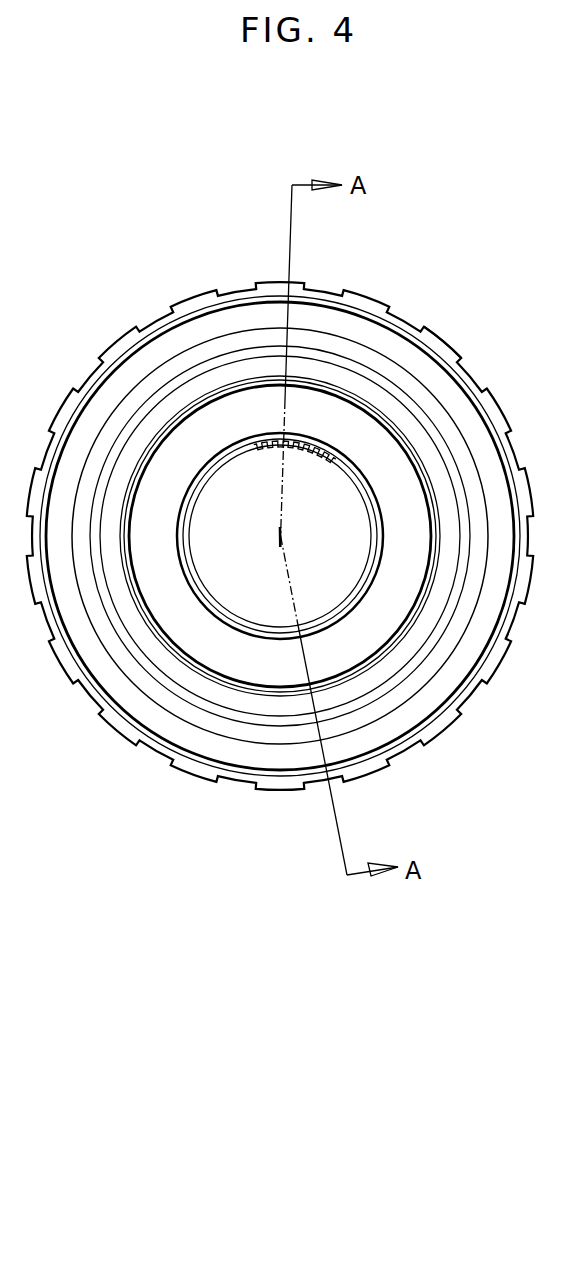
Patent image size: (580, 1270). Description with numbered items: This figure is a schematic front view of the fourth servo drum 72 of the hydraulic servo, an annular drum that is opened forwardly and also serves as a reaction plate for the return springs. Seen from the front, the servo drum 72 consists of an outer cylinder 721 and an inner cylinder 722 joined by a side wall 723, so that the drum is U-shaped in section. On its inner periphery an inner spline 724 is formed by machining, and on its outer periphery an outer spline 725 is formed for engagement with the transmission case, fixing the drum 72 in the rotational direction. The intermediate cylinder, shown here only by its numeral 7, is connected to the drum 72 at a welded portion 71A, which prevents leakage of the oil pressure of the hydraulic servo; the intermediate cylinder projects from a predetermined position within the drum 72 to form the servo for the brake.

The lens barrel 7 is at (309, 536).
The welded portion 71A is at (425, 407).
The fourth servo drum 72 is at (402, 757).
The outer cylinder 721 is at (365, 292).
The inner cylinder 722 is at (362, 478).
The side wall 723 is at (483, 622).
The inner spline 724 is at (243, 456).
The outer spline 725 is at (450, 345).